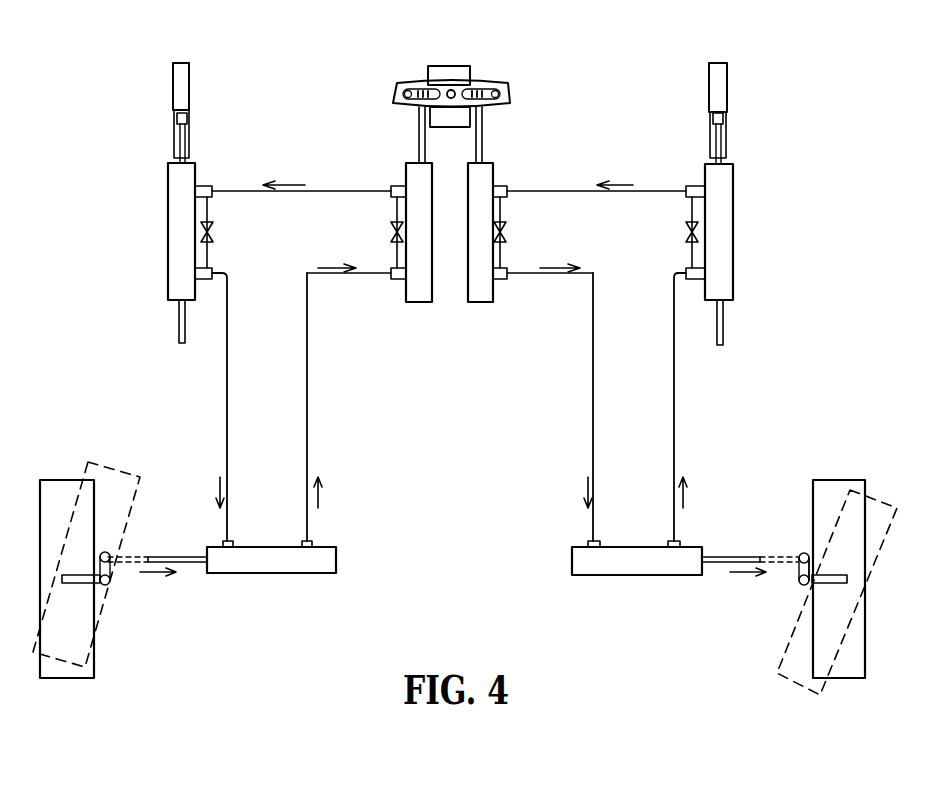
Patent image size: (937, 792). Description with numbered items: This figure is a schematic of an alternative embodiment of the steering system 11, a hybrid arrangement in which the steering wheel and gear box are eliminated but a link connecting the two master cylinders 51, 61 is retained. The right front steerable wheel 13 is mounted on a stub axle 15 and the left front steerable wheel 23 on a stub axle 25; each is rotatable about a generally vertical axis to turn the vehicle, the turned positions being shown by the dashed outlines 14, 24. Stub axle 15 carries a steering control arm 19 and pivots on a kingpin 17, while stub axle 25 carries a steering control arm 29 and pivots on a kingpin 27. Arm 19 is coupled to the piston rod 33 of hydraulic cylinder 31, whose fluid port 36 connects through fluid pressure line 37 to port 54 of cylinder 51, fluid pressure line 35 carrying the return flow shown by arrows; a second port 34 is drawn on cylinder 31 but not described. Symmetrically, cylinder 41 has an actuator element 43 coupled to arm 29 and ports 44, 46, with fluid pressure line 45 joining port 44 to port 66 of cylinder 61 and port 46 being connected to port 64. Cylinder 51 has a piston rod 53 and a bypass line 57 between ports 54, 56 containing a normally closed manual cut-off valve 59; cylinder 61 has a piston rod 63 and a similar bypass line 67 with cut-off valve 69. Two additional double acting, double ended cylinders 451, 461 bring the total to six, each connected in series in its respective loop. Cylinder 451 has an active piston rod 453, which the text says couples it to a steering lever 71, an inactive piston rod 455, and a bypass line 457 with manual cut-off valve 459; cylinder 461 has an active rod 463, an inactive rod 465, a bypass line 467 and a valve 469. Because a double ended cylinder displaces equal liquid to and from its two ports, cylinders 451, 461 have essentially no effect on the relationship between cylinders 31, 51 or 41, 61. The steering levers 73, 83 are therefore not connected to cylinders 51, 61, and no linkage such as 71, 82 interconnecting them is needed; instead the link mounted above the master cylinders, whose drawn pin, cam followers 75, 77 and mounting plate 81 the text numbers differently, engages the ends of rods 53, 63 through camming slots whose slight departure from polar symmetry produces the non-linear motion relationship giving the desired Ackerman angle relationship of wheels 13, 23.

The steering system 11 is at (434, 418).
The right front steerable wheel 13 is at (94, 657).
The dashed outline 14 is at (140, 470).
The stub axle 15 is at (68, 578).
The kingpin 17 is at (104, 585).
The steering control arm 19 is at (115, 560).
The left front steerable wheel 23 is at (813, 490).
The dashed outline 24 is at (780, 648).
The stub axle 25 is at (847, 578).
The kingpin 27 is at (800, 586).
The steering control arm 29 is at (800, 554).
The hydraulic cylinder 31 is at (250, 575).
The piston rod 33 is at (178, 542).
The second port of first door cylinder 34 is at (312, 545).
The fluid pressure line 35 is at (307, 350).
The fluid port 36 is at (235, 545).
The fluid pressure line 37 is at (227, 357).
The fluid pressure cylinder 41 is at (620, 575).
The actuator element 43 is at (745, 557).
The fluid pressure port 44 is at (592, 545).
The fluid pressure line 45 is at (593, 355).
The port 46 is at (670, 544).
The fluid pressure cylinder 51 is at (438, 306).
The piston rod 53 is at (418, 126).
The fluid port 54 is at (395, 185).
The port 56 is at (395, 281).
The bypass fluid pressure line 57 is at (395, 262).
The manual cut-off valve 59 is at (393, 228).
The fluid pressure cylinder 61 is at (462, 304).
The piston rod 63 is at (484, 140).
The port 64 is at (478, 154).
The port 66 is at (500, 281).
The bypass line 67 is at (505, 262).
The manual cut-off valve 69 is at (505, 230).
The steering lever 71 is at (486, 84).
The steering lever 73 is at (452, 86).
The left slot of rocker lever 75 is at (408, 95).
The right slot of rocker lever 77 is at (490, 88).
The pivot mounting block 81 is at (474, 118).
The linkage 82 is at (402, 88).
The steering lever 83 is at (508, 106).
The fluid pressure cylinder 451 is at (168, 235).
The piston rod 453 is at (176, 146).
The piston rod 455 is at (179, 322).
The bypass fluid pressure line 457 is at (212, 266).
The manual cut-off valve 459 is at (214, 232).
The fluid pressure cylinder 461 is at (733, 205).
The piston rod 463 is at (726, 146).
The piston rod 465 is at (723, 322).
The bypass line 467 is at (686, 268).
The manual cut-off valve 469 is at (690, 232).